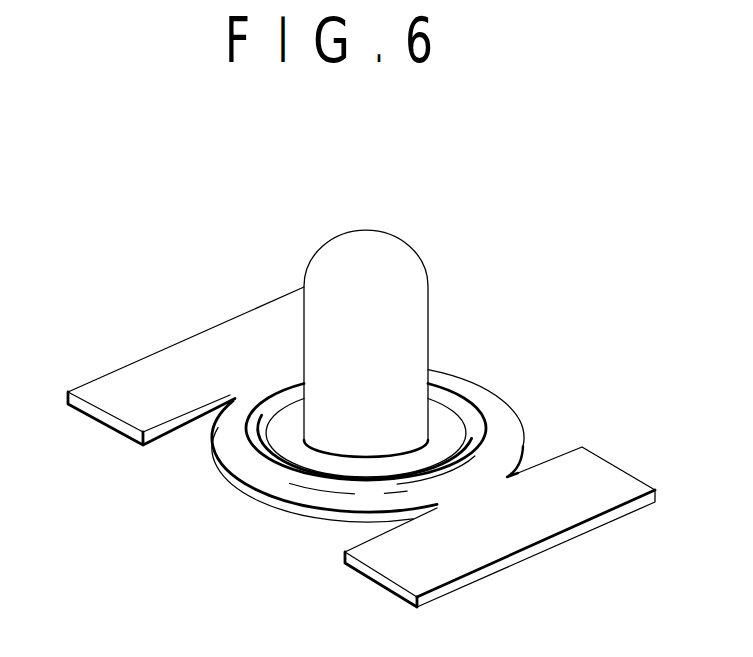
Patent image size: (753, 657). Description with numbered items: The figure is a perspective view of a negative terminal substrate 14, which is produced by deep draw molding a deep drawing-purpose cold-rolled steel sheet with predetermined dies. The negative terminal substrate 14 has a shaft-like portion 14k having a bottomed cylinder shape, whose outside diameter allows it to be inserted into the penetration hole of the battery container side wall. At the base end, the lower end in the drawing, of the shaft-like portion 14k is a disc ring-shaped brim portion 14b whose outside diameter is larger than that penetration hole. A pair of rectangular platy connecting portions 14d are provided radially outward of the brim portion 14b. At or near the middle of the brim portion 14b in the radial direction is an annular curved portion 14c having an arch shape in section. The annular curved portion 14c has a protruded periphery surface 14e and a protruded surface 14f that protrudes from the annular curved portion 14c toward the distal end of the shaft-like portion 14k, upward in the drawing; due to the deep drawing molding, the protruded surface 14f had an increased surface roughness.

The negative terminal substrate 14 is at (452, 220).
The shaft-like portion 14k is at (408, 300).
The brim portion 14b is at (500, 414).
The annular curved portion 14c is at (266, 464).
The connecting portions 14d is at (138, 408).
The protruded periphery surface 14e is at (357, 496).
The protruded surface 14f is at (322, 473).